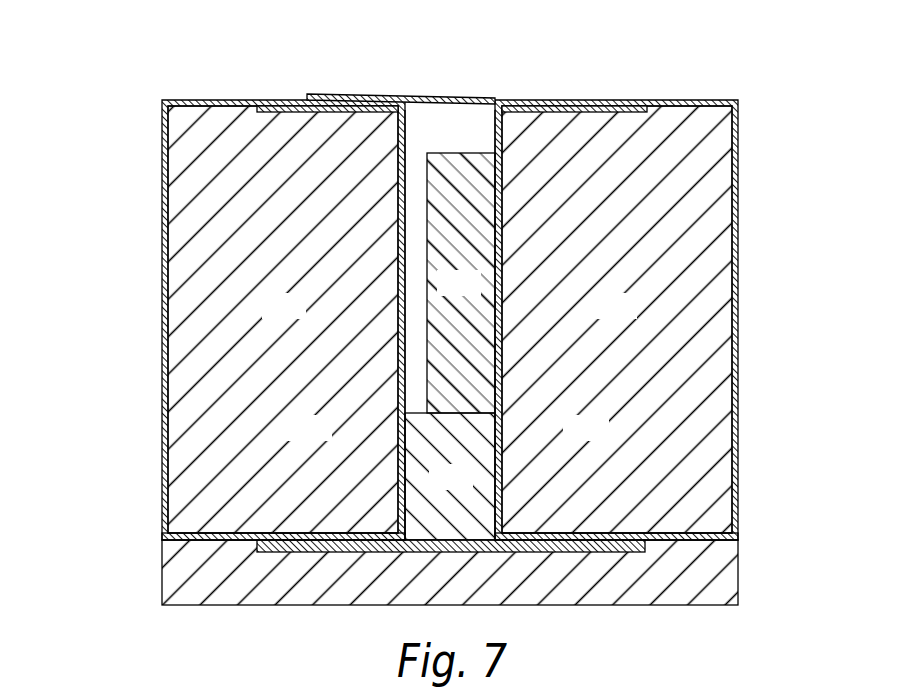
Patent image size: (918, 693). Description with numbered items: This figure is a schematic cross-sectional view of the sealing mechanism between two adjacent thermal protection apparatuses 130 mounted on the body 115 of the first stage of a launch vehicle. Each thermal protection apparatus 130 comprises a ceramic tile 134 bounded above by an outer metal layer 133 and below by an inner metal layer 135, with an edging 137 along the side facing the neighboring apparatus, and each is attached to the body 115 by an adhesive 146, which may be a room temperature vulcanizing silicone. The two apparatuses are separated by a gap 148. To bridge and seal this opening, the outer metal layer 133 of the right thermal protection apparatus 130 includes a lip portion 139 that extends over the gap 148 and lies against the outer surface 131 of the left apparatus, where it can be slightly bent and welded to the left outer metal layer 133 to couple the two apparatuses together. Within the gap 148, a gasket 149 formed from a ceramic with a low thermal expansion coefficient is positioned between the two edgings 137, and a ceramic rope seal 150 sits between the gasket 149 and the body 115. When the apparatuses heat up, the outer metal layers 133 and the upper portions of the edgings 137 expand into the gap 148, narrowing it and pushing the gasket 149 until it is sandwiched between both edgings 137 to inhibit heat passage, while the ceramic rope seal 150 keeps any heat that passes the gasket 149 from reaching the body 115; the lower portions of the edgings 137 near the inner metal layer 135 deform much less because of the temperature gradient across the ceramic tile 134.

The body 115 is at (733, 580).
The thermal protection apparatus 130 is at (105, 207).
The outer surface 131 is at (210, 97).
The outer metal layer 133 is at (283, 104).
The ceramic tile 134 is at (302, 320).
The inner metal layer 135 is at (162, 535).
The edging 137 is at (400, 402).
The lip portion 139 is at (375, 92).
The adhesive 146 is at (487, 548).
The gap 148 is at (452, 135).
The gasket 149 is at (477, 297).
The ceramic rope seal 150 is at (469, 491).